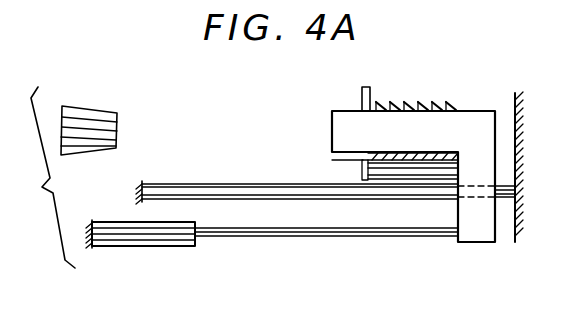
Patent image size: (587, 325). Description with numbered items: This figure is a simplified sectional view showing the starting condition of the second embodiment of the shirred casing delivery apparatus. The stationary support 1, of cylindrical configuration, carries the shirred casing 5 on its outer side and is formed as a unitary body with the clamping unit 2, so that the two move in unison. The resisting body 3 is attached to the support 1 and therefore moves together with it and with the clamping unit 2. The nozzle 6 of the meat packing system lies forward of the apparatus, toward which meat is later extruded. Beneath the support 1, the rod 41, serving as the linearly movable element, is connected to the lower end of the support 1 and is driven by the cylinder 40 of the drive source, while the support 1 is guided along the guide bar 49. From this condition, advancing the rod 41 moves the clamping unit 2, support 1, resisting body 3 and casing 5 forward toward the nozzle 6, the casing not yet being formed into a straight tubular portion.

The stationary support 1 is at (392, 137).
The clamping unit 2 is at (331, 118).
The resisting body 3 is at (367, 87).
The shirred casing 5 is at (432, 100).
The nozzle 6 is at (92, 116).
The cylinder 40 is at (172, 235).
The rod 41 is at (313, 236).
The guide bar 49 is at (402, 193).